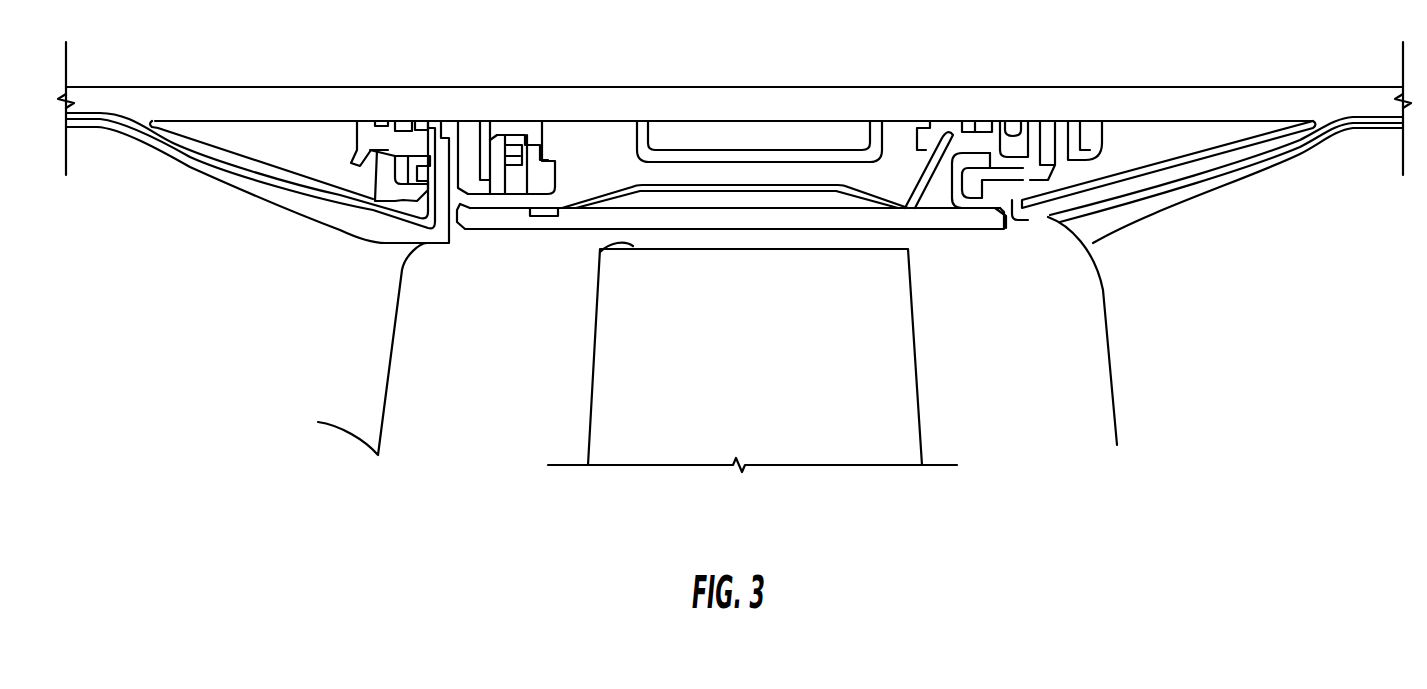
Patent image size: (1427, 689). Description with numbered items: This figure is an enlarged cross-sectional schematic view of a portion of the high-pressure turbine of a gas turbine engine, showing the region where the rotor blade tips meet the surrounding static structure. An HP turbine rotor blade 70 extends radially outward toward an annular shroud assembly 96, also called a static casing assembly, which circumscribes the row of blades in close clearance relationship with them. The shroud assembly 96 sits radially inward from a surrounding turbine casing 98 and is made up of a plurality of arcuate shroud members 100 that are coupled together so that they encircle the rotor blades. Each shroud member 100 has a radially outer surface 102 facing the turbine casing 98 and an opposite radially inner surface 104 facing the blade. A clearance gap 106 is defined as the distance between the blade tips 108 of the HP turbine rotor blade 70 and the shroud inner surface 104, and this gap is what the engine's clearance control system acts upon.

The HP turbine rotor blade 70 is at (767, 404).
The shroud assembly 96 is at (1021, 304).
The turbine casing 98 is at (552, 102).
The shroud member 100 is at (675, 229).
The radially outer surface 102 is at (838, 207).
The radially inner surface 104 is at (775, 229).
The clearance gap 106 is at (598, 238).
The blade tip 108 is at (628, 247).